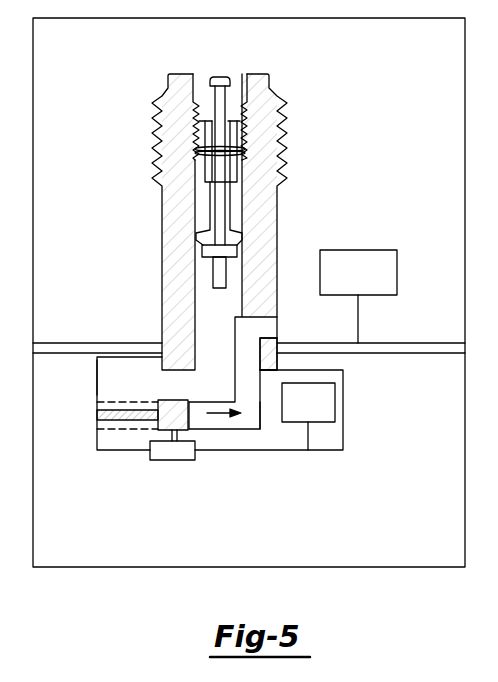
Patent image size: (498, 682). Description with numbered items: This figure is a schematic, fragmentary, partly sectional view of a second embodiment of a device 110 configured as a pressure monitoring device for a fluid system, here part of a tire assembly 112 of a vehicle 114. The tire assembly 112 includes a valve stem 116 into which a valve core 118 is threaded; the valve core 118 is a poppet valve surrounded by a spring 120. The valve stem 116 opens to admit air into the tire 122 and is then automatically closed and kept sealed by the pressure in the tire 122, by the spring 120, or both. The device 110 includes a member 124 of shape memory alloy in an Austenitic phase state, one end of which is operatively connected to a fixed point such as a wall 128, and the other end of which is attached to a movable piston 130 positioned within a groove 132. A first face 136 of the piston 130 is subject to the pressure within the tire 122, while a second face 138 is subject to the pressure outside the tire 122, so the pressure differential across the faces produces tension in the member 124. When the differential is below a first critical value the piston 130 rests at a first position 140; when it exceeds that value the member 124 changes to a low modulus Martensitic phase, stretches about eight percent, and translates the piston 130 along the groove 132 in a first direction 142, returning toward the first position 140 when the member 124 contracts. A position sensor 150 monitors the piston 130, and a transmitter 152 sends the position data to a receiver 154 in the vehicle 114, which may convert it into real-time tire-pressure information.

The device 110 is at (86, 421).
The tire assembly 112 is at (115, 68).
The vehicle 114 is at (110, 567).
The valve stem 116 is at (288, 113).
The valve core 118 is at (229, 118).
The spring 120 is at (222, 155).
The tire 122 is at (62, 343).
The member 124 is at (121, 410).
The wall 128 is at (97, 372).
The piston 130 is at (163, 425).
The groove 132 is at (216, 396).
The first face 136 is at (152, 406).
The second face 138 is at (207, 431).
The first position 140 is at (172, 400).
The first direction 142 is at (200, 427).
The position sensor 150 is at (177, 451).
The transmitter 152 is at (321, 412).
The receiver 154 is at (346, 283).